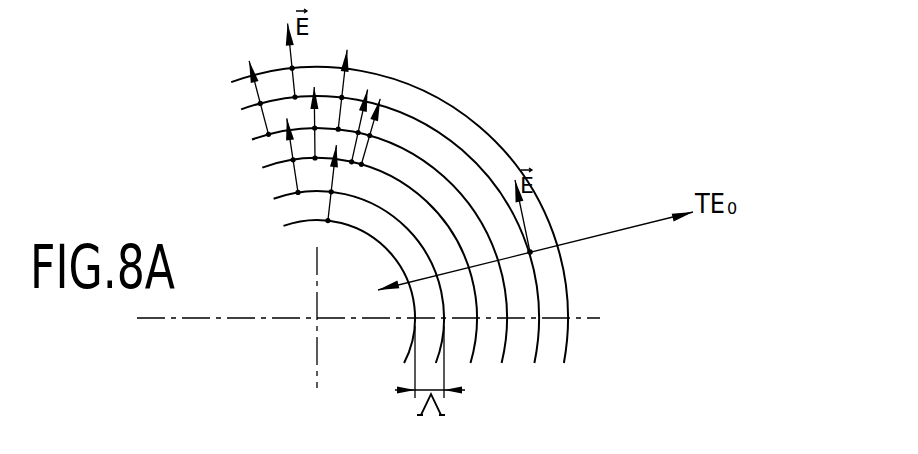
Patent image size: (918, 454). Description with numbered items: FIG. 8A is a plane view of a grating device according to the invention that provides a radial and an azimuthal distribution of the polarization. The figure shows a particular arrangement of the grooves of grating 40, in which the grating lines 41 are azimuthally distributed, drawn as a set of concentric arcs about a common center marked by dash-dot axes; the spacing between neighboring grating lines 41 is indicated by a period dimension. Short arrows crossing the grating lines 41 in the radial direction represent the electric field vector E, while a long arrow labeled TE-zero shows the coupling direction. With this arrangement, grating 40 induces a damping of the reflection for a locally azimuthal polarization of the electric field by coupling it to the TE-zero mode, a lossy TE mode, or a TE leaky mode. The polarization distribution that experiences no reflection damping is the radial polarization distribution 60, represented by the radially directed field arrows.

The grating 40 is at (500, 125).
The grating lines 41 is at (417, 95).
The radial polarization distribution 60 is at (272, 45).